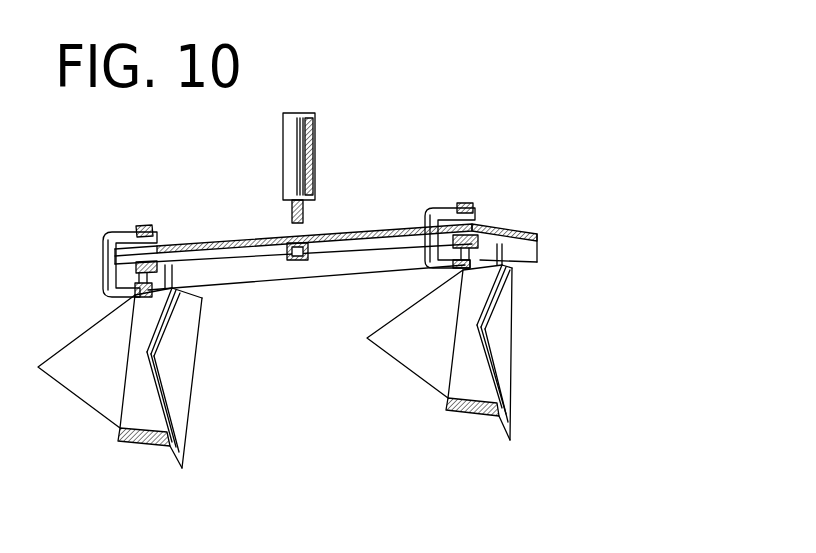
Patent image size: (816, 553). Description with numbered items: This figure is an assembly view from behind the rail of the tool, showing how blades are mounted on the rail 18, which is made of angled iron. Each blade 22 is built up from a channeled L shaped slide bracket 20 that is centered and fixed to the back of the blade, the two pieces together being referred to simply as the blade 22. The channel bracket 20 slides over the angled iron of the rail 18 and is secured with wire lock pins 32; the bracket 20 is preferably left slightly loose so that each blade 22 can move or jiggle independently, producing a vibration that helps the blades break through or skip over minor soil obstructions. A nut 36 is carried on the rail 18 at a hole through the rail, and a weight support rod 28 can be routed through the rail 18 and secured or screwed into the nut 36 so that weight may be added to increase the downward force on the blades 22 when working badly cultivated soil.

The rail 18 is at (520, 248).
The channeled L shaped slide bracket 20 is at (448, 393).
The blade 22 is at (100, 367).
The support rod 28 is at (283, 133).
The wire lock pin 32 is at (146, 224).
The nut 36 is at (292, 260).